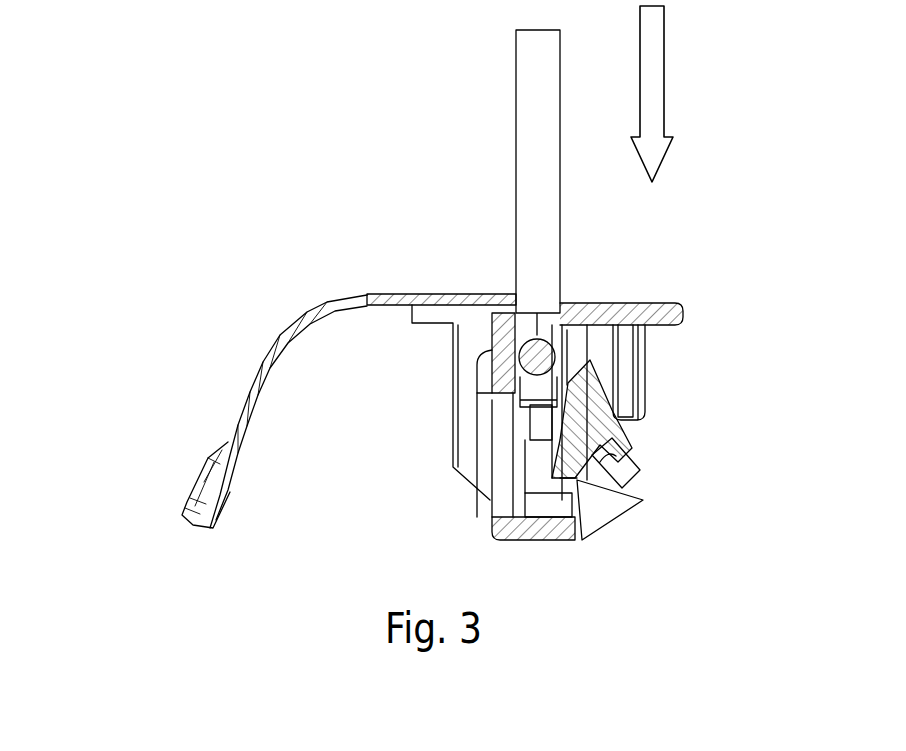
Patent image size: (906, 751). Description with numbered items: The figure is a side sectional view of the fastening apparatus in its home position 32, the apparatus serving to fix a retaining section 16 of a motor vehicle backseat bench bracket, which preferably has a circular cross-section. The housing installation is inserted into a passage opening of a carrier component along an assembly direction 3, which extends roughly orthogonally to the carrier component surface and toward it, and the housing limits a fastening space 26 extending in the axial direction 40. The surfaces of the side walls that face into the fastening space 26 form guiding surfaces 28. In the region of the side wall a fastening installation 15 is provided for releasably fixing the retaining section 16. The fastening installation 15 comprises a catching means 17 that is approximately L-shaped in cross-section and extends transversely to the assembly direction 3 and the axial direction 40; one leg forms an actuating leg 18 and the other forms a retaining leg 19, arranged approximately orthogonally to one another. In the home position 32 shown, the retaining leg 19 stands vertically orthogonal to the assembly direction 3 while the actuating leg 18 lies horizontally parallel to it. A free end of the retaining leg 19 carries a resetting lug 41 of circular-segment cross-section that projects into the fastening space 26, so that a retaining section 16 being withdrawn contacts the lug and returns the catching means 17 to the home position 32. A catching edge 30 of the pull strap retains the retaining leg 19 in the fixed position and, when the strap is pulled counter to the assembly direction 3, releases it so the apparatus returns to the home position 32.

The home position 32 is at (147, 112).
The axial direction 40 is at (664, 32).
The assembly direction 3 is at (707, 94).
The guiding surfaces 28 is at (516, 304).
The retaining section 16 is at (537, 353).
The retaining leg 19 is at (587, 390).
The fastening installation 15 is at (648, 428).
The catching means 17 is at (596, 437).
The resetting lug 41 is at (567, 387).
The catching edge 30 is at (528, 388).
The fastening space 26 is at (548, 413).
The actuating leg 18 is at (553, 462).